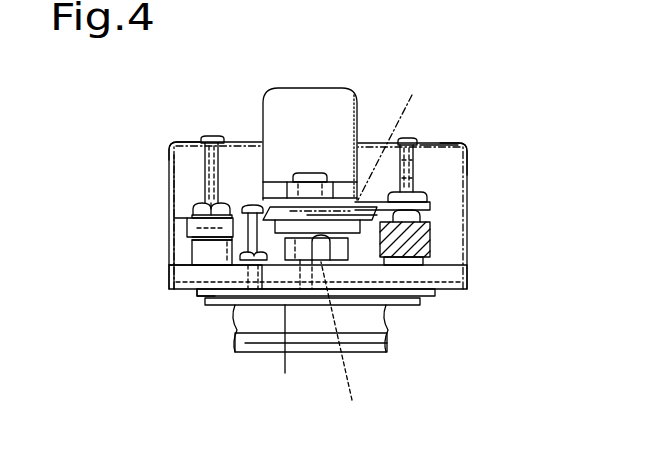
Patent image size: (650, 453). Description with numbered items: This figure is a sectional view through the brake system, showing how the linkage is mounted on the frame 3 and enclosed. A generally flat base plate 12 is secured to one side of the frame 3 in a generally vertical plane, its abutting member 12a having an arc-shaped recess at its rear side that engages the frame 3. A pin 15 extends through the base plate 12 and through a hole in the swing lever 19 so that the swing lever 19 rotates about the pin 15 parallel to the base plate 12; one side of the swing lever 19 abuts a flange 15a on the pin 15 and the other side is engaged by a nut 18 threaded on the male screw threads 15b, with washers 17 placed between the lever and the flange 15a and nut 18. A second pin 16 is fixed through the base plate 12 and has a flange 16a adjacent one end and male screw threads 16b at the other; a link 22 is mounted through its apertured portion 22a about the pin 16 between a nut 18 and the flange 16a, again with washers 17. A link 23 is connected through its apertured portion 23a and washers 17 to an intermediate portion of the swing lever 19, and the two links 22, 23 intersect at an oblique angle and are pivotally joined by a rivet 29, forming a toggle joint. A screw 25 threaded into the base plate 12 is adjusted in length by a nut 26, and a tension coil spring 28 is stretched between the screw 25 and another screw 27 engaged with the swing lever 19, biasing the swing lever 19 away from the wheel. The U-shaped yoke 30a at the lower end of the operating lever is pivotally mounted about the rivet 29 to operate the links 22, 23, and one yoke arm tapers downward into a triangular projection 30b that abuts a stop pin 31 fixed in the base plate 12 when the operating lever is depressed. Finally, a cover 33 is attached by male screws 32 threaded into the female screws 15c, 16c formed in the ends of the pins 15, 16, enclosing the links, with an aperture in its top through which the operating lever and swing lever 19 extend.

The frame 3 is at (390, 325).
The base plate 12 is at (273, 305).
The abutting member 12a is at (300, 262).
The pin 15 is at (420, 302).
The flange 15a is at (437, 300).
The male screw threads 15b is at (470, 150).
The female screw 15c is at (462, 148).
The pin 16 is at (197, 302).
The flange 16a is at (200, 253).
The male screw threads 16b is at (198, 178).
The female screw 16c is at (198, 176).
The washers 17 is at (192, 217).
The nut 18 is at (194, 207).
The swing lever 19 is at (425, 265).
The link 22 is at (270, 265).
The apertured portion 22a is at (187, 228).
The link 23 is at (348, 200).
The apertured portion 23a is at (430, 210).
The screw 25 is at (252, 205).
The nut 26 is at (218, 298).
The screw 27 is at (426, 224).
The tension coil spring 28 is at (399, 133).
The rivet 29 is at (305, 173).
The U-shaped yoke 30a is at (327, 182).
The triangular projection 30b is at (340, 262).
The stop pin 31 is at (341, 330).
The male screws 32 is at (212, 136).
The cover 33 is at (412, 170).